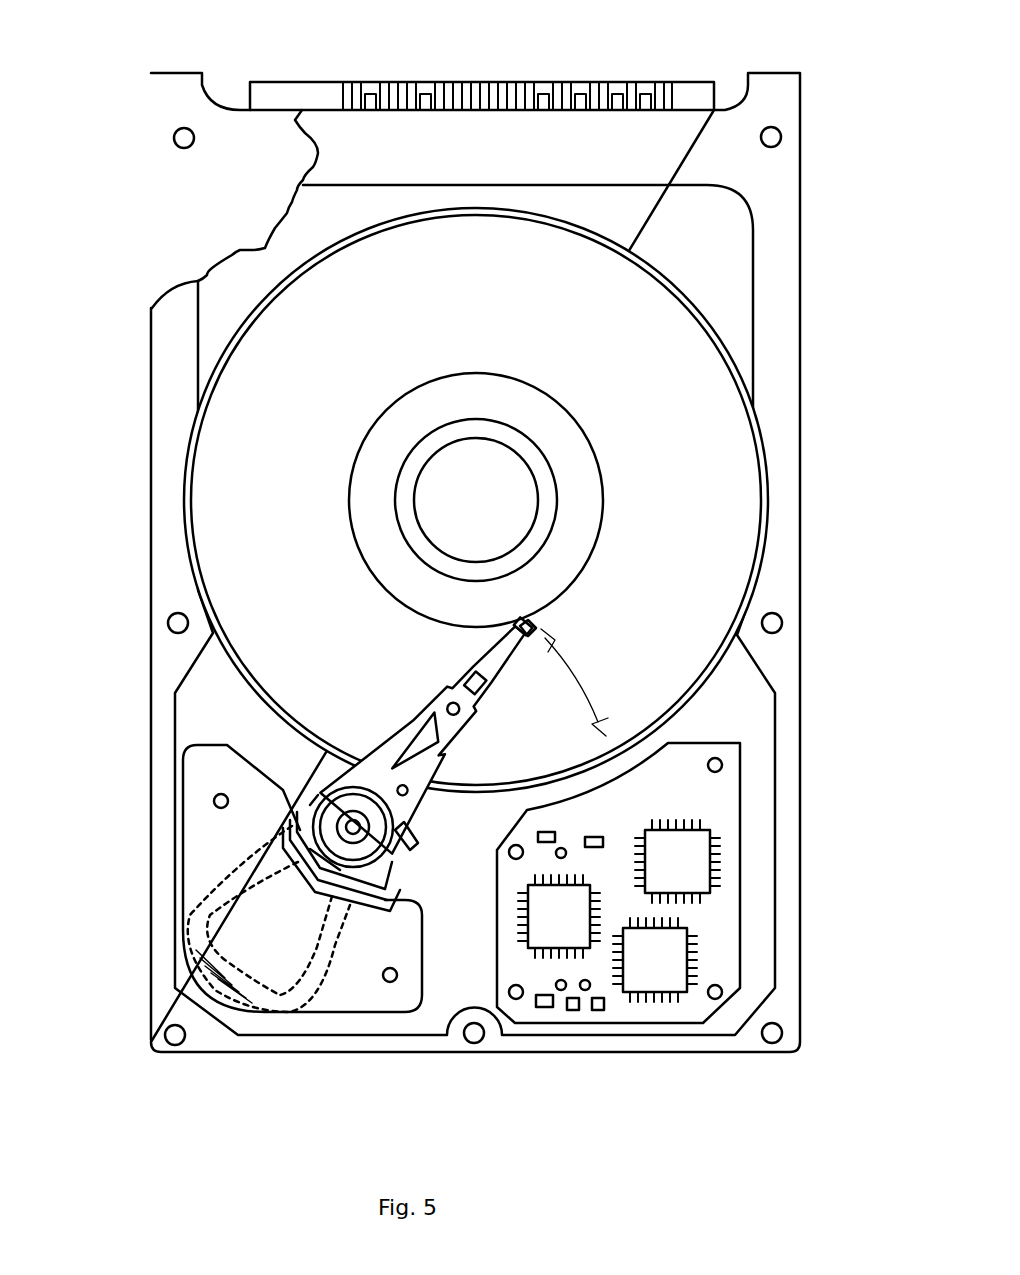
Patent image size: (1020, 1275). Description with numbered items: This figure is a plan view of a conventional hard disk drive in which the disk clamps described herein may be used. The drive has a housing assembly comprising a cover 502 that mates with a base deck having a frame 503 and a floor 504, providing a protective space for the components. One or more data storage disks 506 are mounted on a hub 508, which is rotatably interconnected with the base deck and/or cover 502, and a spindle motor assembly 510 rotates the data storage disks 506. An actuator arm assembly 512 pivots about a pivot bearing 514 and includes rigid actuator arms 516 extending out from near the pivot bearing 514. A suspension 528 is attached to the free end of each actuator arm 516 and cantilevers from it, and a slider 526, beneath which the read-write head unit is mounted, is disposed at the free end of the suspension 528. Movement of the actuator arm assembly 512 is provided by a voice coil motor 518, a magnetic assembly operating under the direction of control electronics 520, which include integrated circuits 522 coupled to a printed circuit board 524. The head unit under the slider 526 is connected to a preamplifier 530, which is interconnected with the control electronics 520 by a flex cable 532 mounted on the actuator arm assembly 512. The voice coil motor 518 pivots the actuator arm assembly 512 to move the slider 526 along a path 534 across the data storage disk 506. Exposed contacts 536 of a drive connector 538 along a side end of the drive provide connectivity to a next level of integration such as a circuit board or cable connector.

The cover 502 is at (475, 562).
The frame 503 is at (175, 575).
The floor 504 is at (218, 667).
The data storage disk 506 is at (318, 375).
The hub 508 is at (355, 450).
The spindle motor assembly 510 is at (445, 517).
The actuator arm assembly 512 is at (433, 800).
The pivot bearing 514 is at (325, 827).
The actuator arm 516 is at (340, 780).
The voice coil motor 518 is at (150, 920).
The control electronics 520 is at (680, 934).
The integrated circuits 522 is at (683, 857).
The printed circuit board 524 is at (713, 927).
The slider 526 is at (538, 614).
The suspension 528 is at (478, 667).
The preamplifier 530 is at (438, 838).
The flex cable 532 is at (408, 848).
The path 534 is at (578, 668).
The exposed contacts 536 is at (436, 70).
The drive connector 538 is at (255, 90).